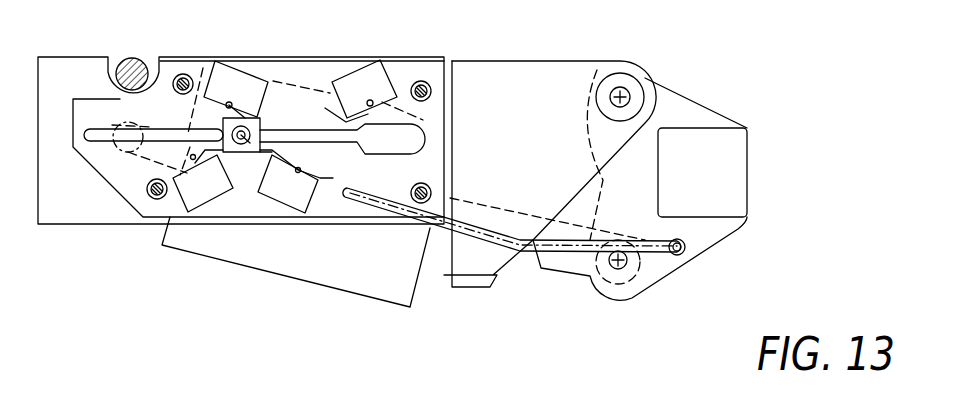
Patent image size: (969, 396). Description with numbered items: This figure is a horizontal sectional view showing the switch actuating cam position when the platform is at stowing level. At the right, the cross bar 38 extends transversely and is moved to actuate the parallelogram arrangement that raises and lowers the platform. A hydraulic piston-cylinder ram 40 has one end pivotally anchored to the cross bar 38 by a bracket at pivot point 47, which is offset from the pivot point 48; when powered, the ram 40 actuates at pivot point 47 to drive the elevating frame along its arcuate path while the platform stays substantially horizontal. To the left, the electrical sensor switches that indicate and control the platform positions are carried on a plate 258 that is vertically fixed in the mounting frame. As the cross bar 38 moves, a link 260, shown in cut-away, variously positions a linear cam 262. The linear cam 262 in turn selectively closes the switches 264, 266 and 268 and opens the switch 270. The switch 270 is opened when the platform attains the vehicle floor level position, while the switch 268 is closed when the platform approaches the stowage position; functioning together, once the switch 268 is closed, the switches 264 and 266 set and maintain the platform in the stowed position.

The cross bar 38 is at (702, 172).
The hydraulic piston-cylinder ram 40 is at (533, 218).
The pivot point 47 is at (617, 263).
The pivot point 48 is at (622, 95).
The plate 258 is at (115, 165).
The link 260 is at (470, 232).
The linear cam 262 is at (262, 124).
The switch 264 is at (290, 202).
The switch 266 is at (207, 210).
The switch 268 is at (241, 78).
The switch 270 is at (352, 78).